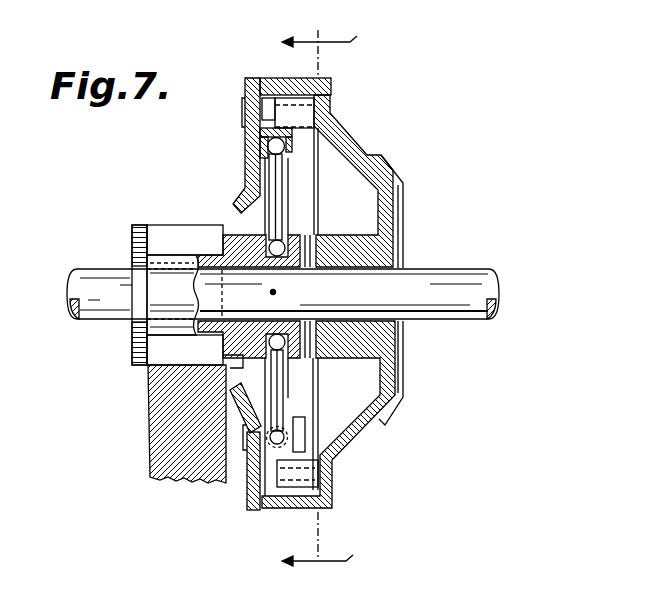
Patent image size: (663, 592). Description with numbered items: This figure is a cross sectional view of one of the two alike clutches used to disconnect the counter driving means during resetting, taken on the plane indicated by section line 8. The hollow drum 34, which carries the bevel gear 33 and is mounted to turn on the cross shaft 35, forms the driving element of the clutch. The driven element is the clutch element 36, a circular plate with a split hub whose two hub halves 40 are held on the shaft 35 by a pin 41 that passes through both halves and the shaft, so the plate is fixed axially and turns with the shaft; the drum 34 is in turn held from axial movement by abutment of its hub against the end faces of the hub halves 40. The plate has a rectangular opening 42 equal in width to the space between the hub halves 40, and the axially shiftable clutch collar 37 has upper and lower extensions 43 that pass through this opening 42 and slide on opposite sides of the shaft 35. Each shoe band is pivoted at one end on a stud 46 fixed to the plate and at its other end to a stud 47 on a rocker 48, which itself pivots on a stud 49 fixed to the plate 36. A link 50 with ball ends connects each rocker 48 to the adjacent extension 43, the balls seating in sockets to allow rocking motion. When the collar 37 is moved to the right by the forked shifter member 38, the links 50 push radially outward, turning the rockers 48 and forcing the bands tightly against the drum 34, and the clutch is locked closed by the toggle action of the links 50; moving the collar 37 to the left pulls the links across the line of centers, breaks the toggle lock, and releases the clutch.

The section line 8- 8 is at (319, 299).
The bevel gear 33 is at (391, 412).
The hollow drum 34 is at (324, 80).
The cross shaft 35 is at (132, 275).
The clutch element 36 is at (245, 140).
The clutch collar 37 is at (157, 292).
The shifter member 38 is at (157, 431).
The hub halves 40 is at (332, 362).
The pin 41 is at (276, 291).
The rectangular opening 42 is at (252, 372).
The extensions 43 is at (304, 366).
The stud 46 is at (304, 68).
The stud 47 is at (298, 507).
The rocker 48 is at (250, 490).
The stud 49 is at (302, 422).
The link 50 is at (279, 380).